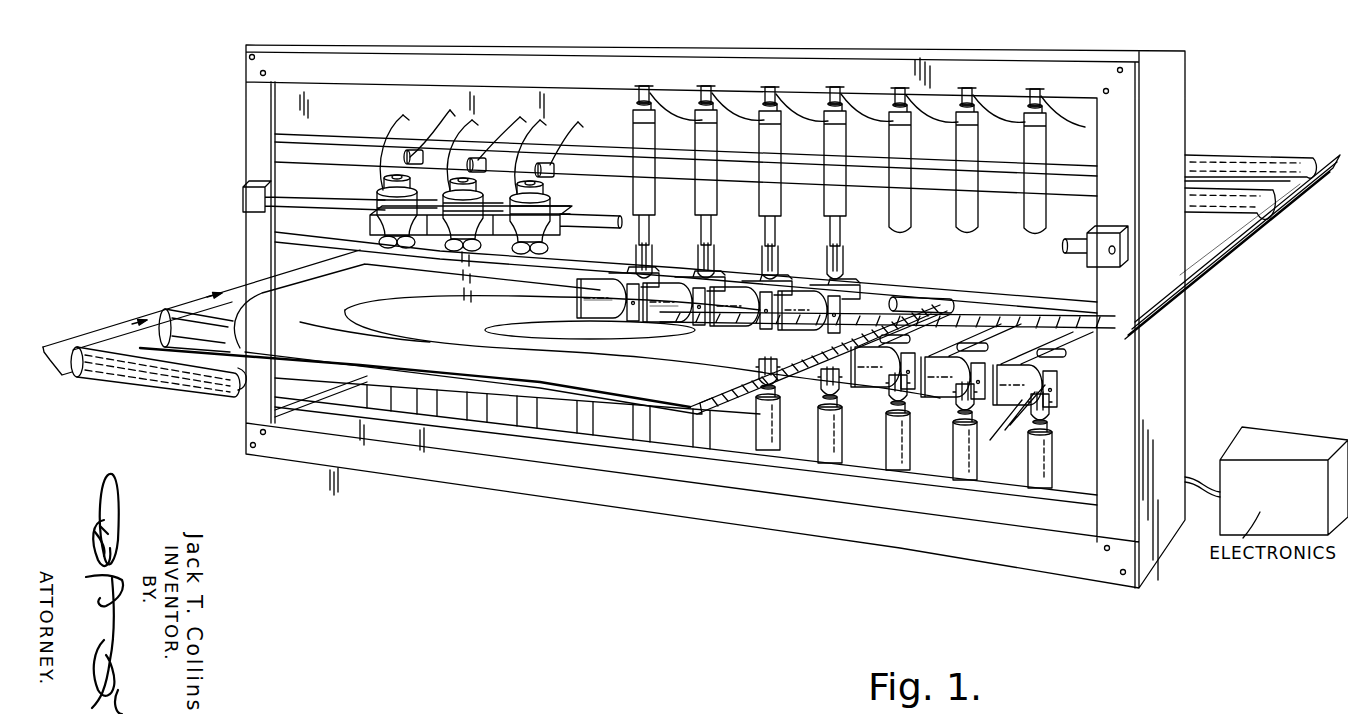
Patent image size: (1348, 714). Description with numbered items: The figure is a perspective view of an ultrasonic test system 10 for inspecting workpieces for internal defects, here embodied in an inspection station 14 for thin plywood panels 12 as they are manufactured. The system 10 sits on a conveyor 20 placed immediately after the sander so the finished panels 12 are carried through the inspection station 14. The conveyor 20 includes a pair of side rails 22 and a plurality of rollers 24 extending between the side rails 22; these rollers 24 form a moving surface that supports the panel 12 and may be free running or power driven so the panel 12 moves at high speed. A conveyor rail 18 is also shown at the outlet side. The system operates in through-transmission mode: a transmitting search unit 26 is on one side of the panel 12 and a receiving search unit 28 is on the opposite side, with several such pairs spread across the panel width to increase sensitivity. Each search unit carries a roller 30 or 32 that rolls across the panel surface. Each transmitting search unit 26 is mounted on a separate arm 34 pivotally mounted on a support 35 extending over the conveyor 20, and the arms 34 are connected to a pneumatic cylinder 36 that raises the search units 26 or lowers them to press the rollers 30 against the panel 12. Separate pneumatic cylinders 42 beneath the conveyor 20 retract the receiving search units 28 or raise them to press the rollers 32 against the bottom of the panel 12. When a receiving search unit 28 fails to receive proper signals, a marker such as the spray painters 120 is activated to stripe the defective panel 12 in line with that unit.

The ultrasonic system 10 is at (166, 423).
The plywood panel 12 is at (272, 336).
The inspection station 14 is at (1204, 98).
The conveyor rail 18 is at (1249, 286).
The conveyor 20 is at (1320, 190).
The side rails 22 is at (210, 294).
The rollers 24 is at (174, 318).
The transmitting search unit 26 is at (662, 322).
The receiving search unit 28 is at (1012, 398).
The roller 30 is at (677, 327).
The roller 32 is at (1022, 400).
The arm 34 is at (582, 294).
The support 35 is at (903, 303).
The pneumatic cylinder 36 is at (636, 124).
The pneumatic cylinders 42 is at (827, 447).
The spray painters 120 is at (552, 198).